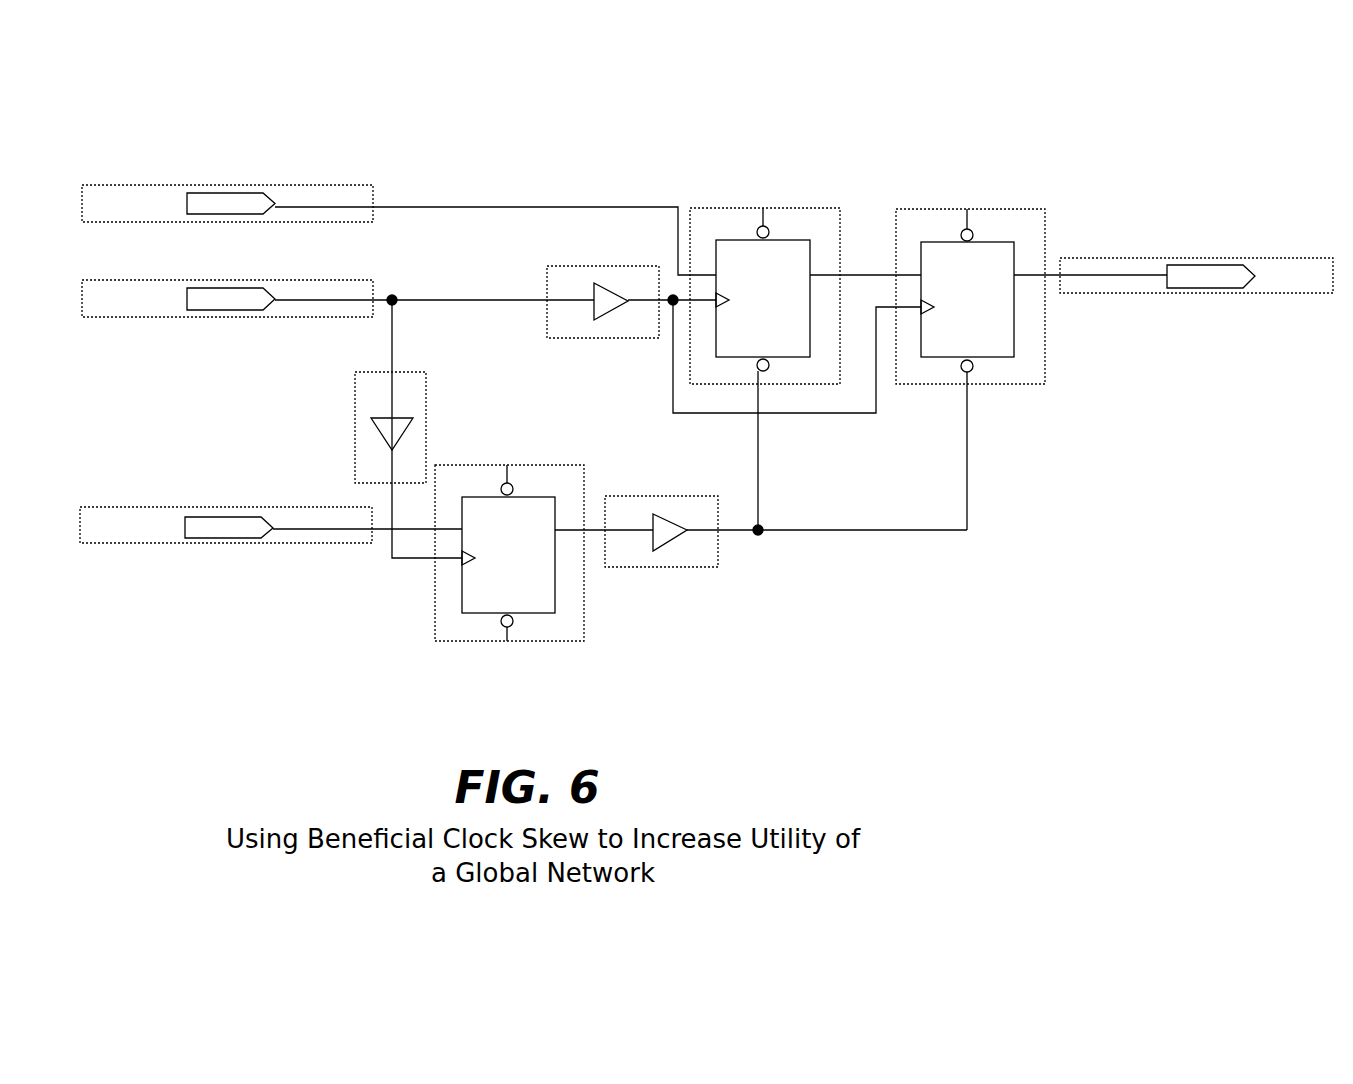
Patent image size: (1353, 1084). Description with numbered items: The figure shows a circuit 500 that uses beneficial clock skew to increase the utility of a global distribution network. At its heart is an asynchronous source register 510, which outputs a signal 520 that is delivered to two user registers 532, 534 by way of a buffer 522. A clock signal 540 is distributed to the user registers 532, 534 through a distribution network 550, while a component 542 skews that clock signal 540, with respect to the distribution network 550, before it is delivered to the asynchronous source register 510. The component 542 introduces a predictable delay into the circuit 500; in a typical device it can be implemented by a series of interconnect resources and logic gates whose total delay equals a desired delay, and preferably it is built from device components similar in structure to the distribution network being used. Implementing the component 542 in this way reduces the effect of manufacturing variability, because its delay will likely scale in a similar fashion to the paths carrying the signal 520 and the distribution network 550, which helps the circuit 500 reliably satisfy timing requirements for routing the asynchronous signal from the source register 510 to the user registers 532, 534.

The circuit 500 is at (318, 108).
The asynchronous source register 510 is at (509, 553).
The signal 520 is at (743, 536).
The buffer 522 is at (672, 568).
The user register 532 is at (805, 296).
The user register 534 is at (970, 296).
The clock signal 540 is at (425, 299).
The component 542 is at (426, 432).
The distribution network 550 is at (612, 338).